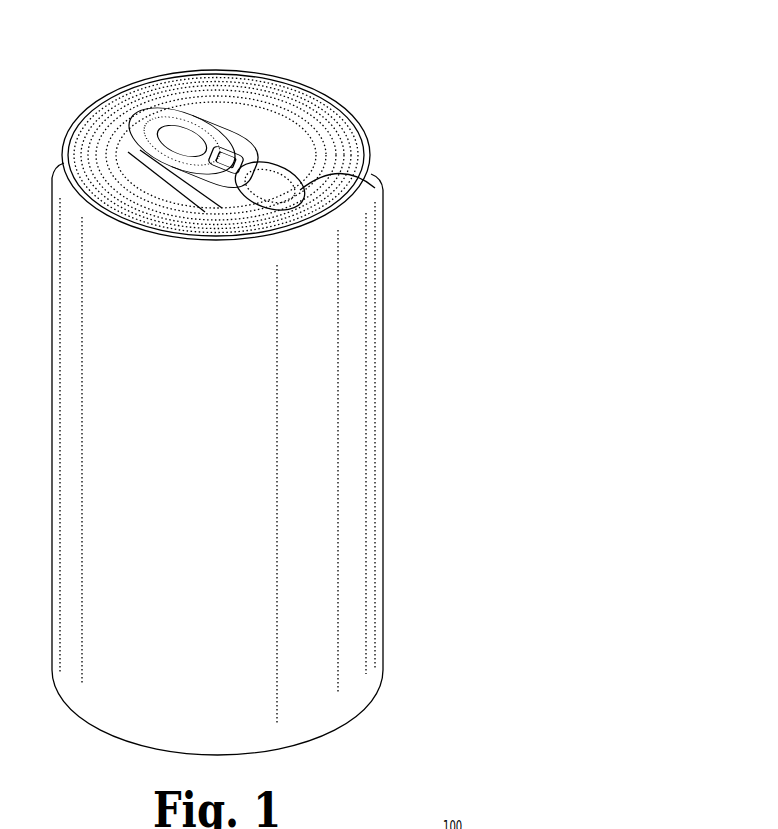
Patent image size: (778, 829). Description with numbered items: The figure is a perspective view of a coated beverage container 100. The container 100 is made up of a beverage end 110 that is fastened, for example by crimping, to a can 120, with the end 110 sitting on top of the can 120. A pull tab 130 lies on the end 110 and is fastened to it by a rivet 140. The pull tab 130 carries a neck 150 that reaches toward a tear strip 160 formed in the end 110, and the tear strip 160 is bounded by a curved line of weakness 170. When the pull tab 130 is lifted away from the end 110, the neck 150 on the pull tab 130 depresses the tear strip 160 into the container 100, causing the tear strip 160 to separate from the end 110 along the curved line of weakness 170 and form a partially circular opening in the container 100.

The coated beverage container 100 is at (410, 57).
The beverage end 110 is at (350, 108).
The can 120 is at (384, 273).
The pull tab 130 is at (150, 147).
The rivet 140 is at (222, 158).
The neck 150 is at (252, 177).
The tear strip 160 is at (265, 187).
The curved line of weakness 170 is at (383, 192).